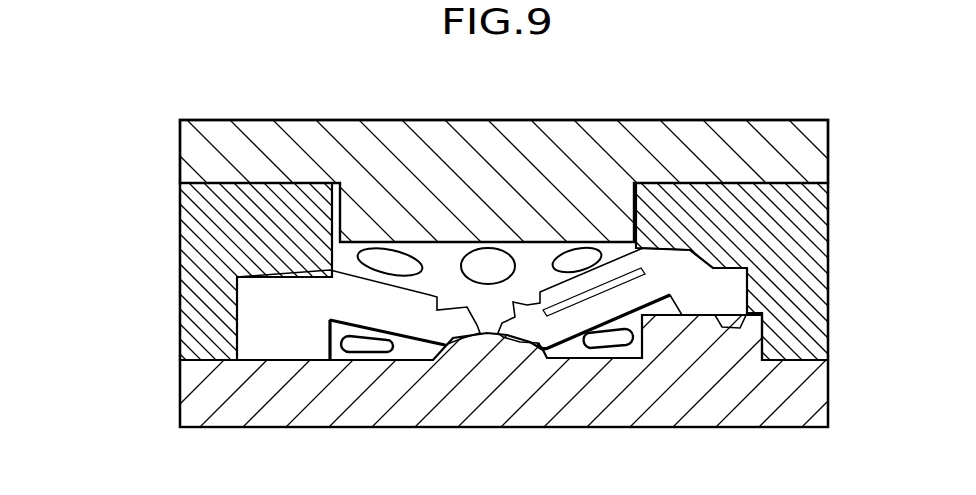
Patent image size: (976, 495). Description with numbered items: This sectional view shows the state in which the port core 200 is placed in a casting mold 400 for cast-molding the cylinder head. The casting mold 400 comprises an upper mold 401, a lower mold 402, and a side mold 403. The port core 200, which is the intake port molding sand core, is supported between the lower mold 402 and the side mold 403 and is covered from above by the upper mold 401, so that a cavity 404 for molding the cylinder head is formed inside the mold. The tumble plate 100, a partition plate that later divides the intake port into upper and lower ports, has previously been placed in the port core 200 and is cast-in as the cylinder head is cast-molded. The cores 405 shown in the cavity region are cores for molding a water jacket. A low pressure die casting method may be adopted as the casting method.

The casting mold 400 is at (108, 135).
The upper mold 401 is at (198, 152).
The lower mold 402 is at (200, 402).
The side mold 403 is at (198, 250).
The cavity 404 is at (438, 257).
The core for molding a water jacket 405 is at (385, 262).
The port core 200 is at (503, 330).
The tumble plate 100 is at (628, 278).